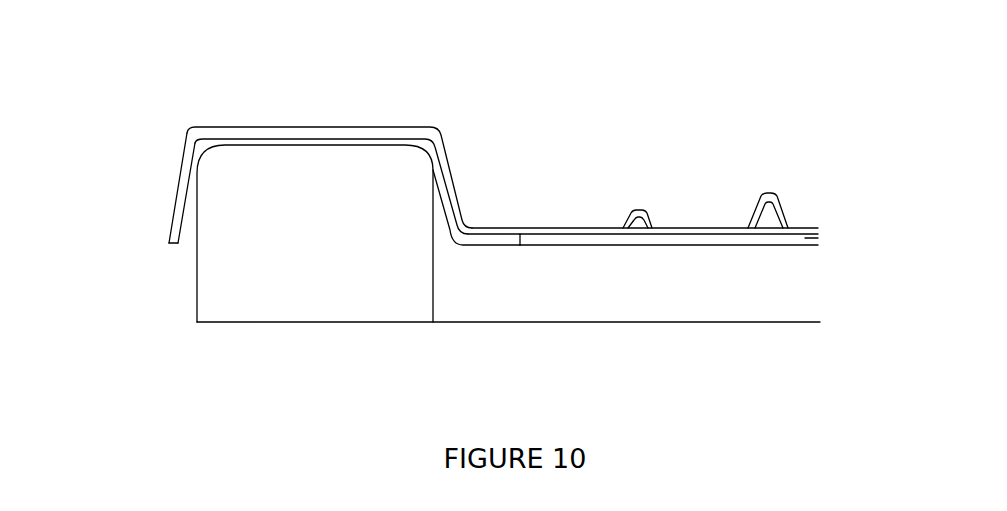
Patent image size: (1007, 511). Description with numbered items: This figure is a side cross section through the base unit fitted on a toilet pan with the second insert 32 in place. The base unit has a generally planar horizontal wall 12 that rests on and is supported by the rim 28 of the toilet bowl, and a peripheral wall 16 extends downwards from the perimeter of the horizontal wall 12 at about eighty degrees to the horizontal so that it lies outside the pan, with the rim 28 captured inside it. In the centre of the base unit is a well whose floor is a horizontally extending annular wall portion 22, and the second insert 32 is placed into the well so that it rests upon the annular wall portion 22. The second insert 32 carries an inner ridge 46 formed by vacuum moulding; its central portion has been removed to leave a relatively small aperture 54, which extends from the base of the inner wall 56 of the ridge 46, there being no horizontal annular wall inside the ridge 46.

The horizontal wall 12 is at (342, 128).
The peripheral wall 16 is at (173, 208).
The annular wall portion 22 is at (497, 240).
The rim 28 is at (433, 308).
The second insert 32 is at (552, 229).
The inner ridge 46 is at (768, 193).
The aperture 54 is at (807, 237).
The inner wall 56 is at (783, 207).